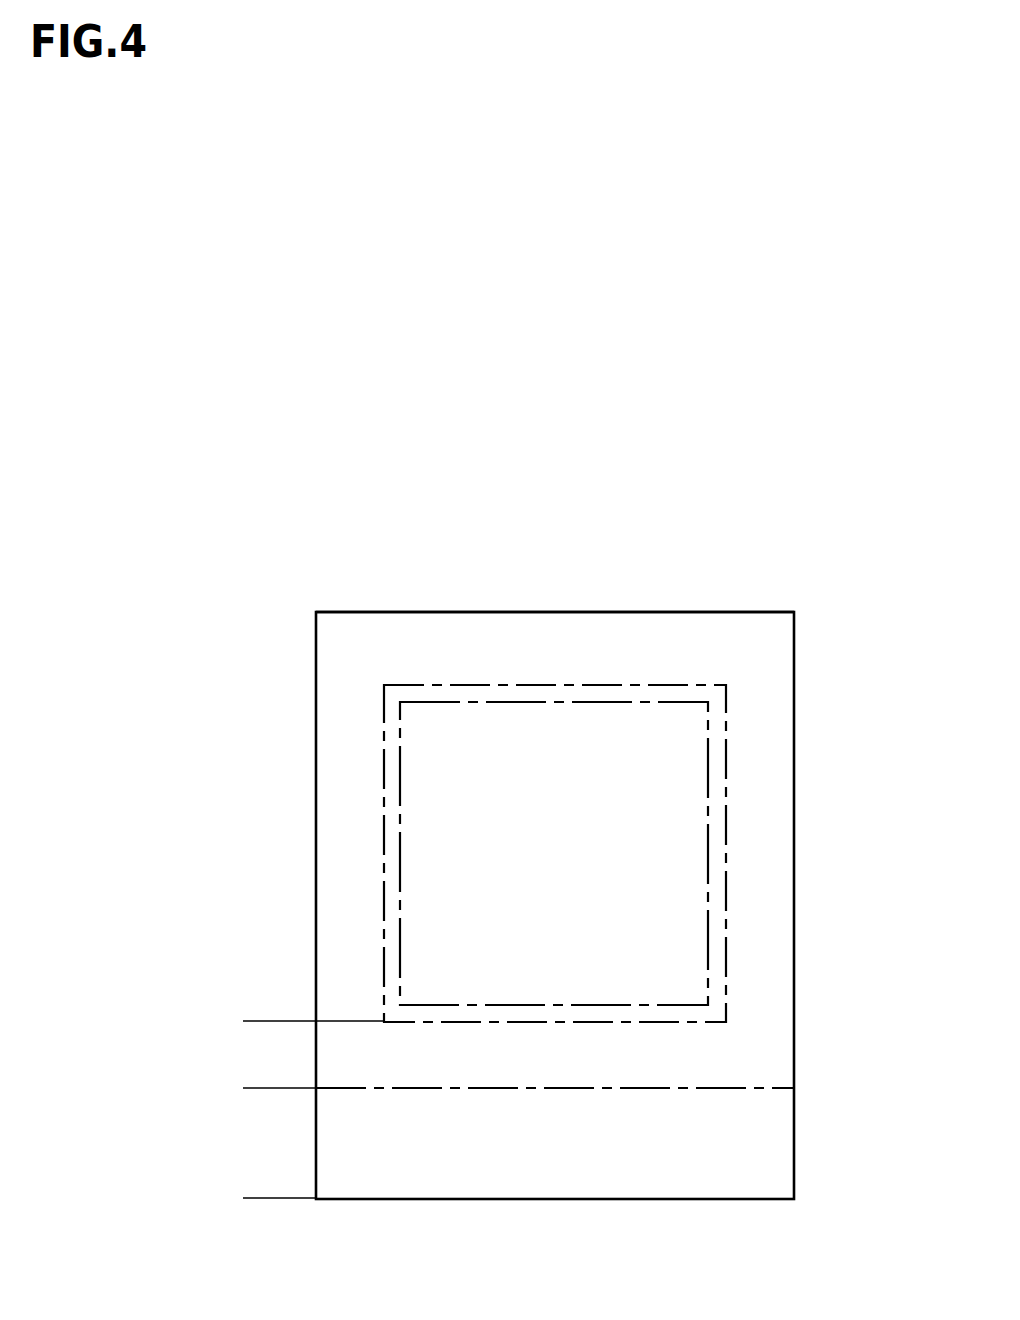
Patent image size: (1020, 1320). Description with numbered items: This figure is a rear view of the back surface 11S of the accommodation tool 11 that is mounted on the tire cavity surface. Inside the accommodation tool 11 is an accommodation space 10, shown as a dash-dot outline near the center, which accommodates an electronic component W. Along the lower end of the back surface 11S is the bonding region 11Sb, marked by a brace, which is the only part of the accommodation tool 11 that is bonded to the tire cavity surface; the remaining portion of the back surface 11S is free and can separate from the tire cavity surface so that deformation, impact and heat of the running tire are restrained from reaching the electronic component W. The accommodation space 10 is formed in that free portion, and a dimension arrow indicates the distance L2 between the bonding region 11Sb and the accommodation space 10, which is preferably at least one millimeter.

The accommodation tool 11 is at (842, 552).
The back surface 11S is at (702, 638).
The bonding region 11Sb is at (240, 1091).
The accommodation space 10 is at (482, 685).
The electronic component W is at (600, 703).
The distance L2 is at (251, 1022).